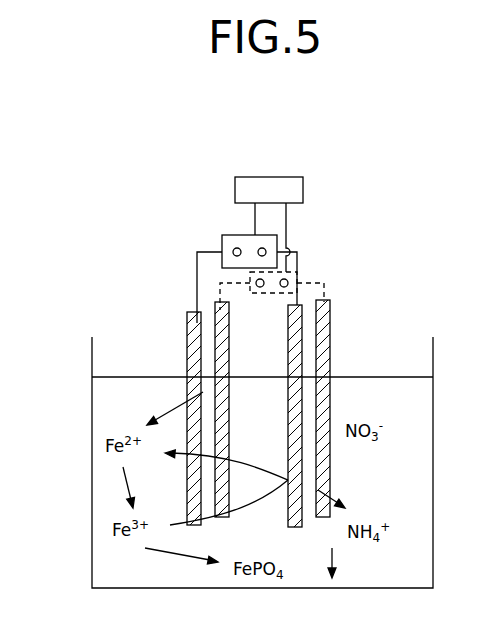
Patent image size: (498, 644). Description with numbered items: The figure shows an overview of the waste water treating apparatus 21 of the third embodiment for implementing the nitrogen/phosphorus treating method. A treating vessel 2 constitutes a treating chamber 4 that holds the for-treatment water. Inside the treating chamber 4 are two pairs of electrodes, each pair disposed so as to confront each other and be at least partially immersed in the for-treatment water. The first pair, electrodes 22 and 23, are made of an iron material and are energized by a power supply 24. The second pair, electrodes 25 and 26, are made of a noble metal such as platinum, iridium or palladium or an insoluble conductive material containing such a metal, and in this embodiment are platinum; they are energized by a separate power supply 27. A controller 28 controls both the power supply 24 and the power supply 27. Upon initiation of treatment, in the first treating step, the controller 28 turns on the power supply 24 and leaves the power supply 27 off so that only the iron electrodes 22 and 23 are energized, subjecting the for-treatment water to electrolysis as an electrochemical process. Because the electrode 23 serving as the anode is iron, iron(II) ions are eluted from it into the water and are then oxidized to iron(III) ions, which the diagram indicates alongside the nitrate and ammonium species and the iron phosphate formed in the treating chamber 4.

The treating vessel 2 is at (91, 470).
The treating chamber 4 is at (273, 438).
The waste water treating apparatus 21 is at (142, 192).
The electrode 22 is at (302, 522).
The electrode 23 is at (187, 333).
The power supply 24 is at (222, 240).
The electrode 25 is at (330, 323).
The electrode 26 is at (214, 312).
The power supply 27 is at (325, 283).
The controller 28 is at (287, 176).